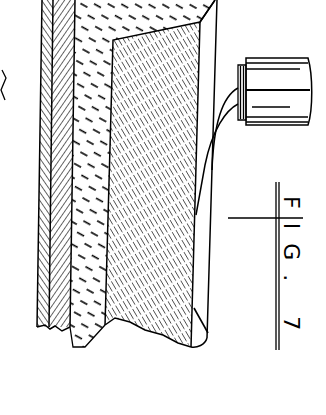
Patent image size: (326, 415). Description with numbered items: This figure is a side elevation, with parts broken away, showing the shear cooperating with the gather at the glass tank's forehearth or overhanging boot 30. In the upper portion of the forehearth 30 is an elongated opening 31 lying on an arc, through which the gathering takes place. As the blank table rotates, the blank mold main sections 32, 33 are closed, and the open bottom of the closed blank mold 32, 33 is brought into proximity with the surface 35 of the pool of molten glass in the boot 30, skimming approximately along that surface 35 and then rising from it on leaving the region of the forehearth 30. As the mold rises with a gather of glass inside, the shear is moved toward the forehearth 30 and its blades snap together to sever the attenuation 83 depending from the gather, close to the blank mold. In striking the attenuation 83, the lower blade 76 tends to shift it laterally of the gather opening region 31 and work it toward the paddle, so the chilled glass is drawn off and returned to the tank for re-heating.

The forehearth 30 is at (37, 320).
The elongated opening 31 is at (216, 46).
The lower blade 76 is at (241, 0).
The blank mold main section 32 is at (291, 58).
The blank mold main section 33 is at (290, 125).
The attenuation 83 is at (227, 131).
The surface 35 is at (194, 308).